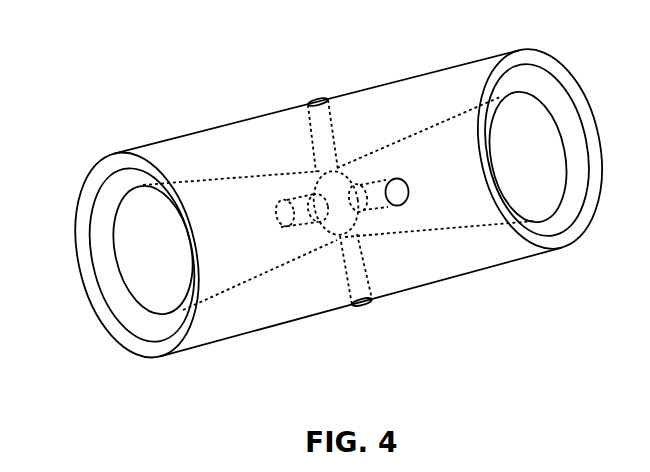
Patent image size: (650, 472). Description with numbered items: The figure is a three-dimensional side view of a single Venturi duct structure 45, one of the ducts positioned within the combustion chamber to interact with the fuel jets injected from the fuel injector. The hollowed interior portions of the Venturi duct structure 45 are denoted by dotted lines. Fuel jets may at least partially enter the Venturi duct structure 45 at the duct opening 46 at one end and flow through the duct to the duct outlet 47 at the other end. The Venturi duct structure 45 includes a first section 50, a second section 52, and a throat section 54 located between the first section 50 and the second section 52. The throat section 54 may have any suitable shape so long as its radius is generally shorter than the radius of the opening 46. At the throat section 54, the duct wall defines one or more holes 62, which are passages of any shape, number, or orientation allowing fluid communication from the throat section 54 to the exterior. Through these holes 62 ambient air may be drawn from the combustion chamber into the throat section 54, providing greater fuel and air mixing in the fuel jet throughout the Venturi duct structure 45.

The Venturi duct structure 45 is at (247, 100).
The duct opening 46 is at (130, 313).
The duct outlet 47 is at (568, 192).
The first section 50 is at (210, 197).
The second section 52 is at (462, 135).
The throat section 54 is at (320, 133).
The holes 62 is at (335, 128).